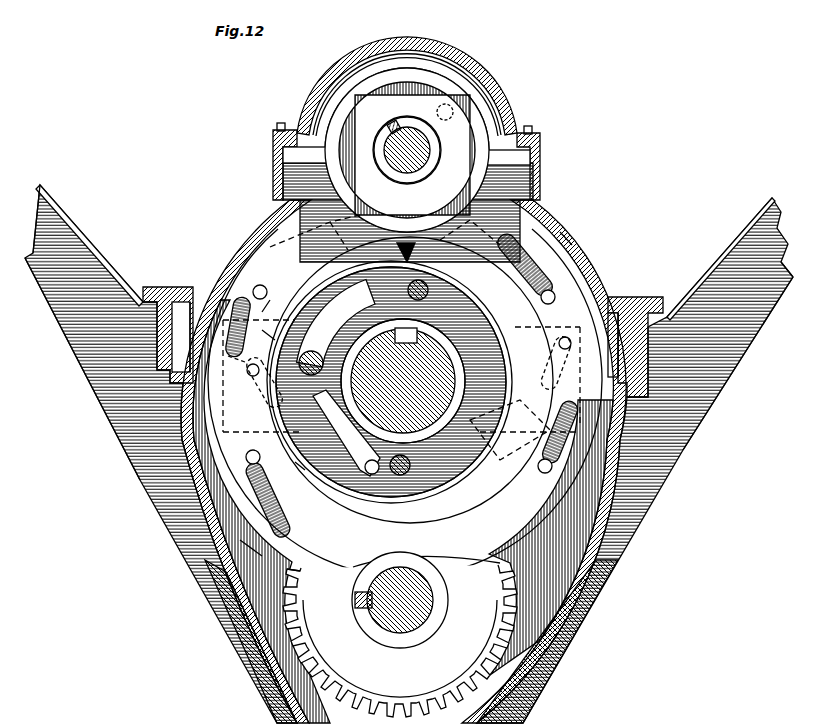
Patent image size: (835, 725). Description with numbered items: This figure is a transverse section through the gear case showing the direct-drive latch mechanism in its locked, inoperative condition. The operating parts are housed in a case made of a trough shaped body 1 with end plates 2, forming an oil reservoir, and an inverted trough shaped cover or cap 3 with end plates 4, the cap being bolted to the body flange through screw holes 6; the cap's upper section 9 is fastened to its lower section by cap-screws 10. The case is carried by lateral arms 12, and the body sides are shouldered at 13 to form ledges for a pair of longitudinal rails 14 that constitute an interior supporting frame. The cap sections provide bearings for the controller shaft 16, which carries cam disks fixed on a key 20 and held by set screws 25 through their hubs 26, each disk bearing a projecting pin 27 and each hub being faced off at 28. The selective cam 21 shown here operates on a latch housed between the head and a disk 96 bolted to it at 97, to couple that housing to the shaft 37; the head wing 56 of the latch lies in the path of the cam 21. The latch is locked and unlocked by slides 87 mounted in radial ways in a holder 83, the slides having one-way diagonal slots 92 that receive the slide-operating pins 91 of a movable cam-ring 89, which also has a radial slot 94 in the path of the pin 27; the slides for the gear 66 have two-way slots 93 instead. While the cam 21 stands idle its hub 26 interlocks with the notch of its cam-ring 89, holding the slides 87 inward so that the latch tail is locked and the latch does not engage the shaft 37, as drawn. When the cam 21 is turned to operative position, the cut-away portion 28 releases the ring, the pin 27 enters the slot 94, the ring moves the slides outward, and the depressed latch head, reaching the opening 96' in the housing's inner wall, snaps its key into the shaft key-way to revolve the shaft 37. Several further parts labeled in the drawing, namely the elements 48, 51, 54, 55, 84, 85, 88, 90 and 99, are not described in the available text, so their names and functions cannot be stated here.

The trough shaped body 1 is at (565, 618).
The end plates 2 is at (585, 520).
The cover or cap 3 is at (565, 240).
The end plates 4 is at (566, 238).
The screw holes 6 is at (536, 176).
The upper section 9 is at (500, 95).
The cap-screws 10 is at (530, 132).
The lateral arms 12 is at (409, 454).
The offset or shoulder 13 is at (413, 270).
The longitudinal rails 14 is at (409, 369).
The controller shaft 16 is at (406, 156).
The key 20 is at (407, 150).
The peripheral cam 21 is at (472, 88).
The set screws 25 is at (409, 154).
The hub 26 is at (388, 126).
The projecting pin 27 is at (446, 102).
The faced-off or cut-away portion 28 is at (398, 125).
The shaft 37 is at (336, 323).
The pin 48 is at (428, 292).
The lever 51 is at (346, 433).
The link 54 is at (237, 362).
The pin 55 is at (283, 380).
The head wing 56 is at (410, 337).
The gear 66 is at (280, 575).
The holder 83 is at (186, 380).
The flange block 84 is at (180, 297).
The gear 85 is at (402, 458).
The slides 87 is at (434, 444).
The ring 88 is at (242, 262).
The cam-ring 89 is at (255, 232).
The guide ring 90 is at (215, 440).
The pins 91 is at (566, 340).
The diagonal slots 92 is at (429, 420).
The slots 93 is at (287, 403).
The radial slot 94 is at (386, 242).
The disk 96 is at (391, 382).
The opening 96' is at (403, 381).
The bolts 97 is at (409, 455).
The gear hub 99 is at (488, 596).